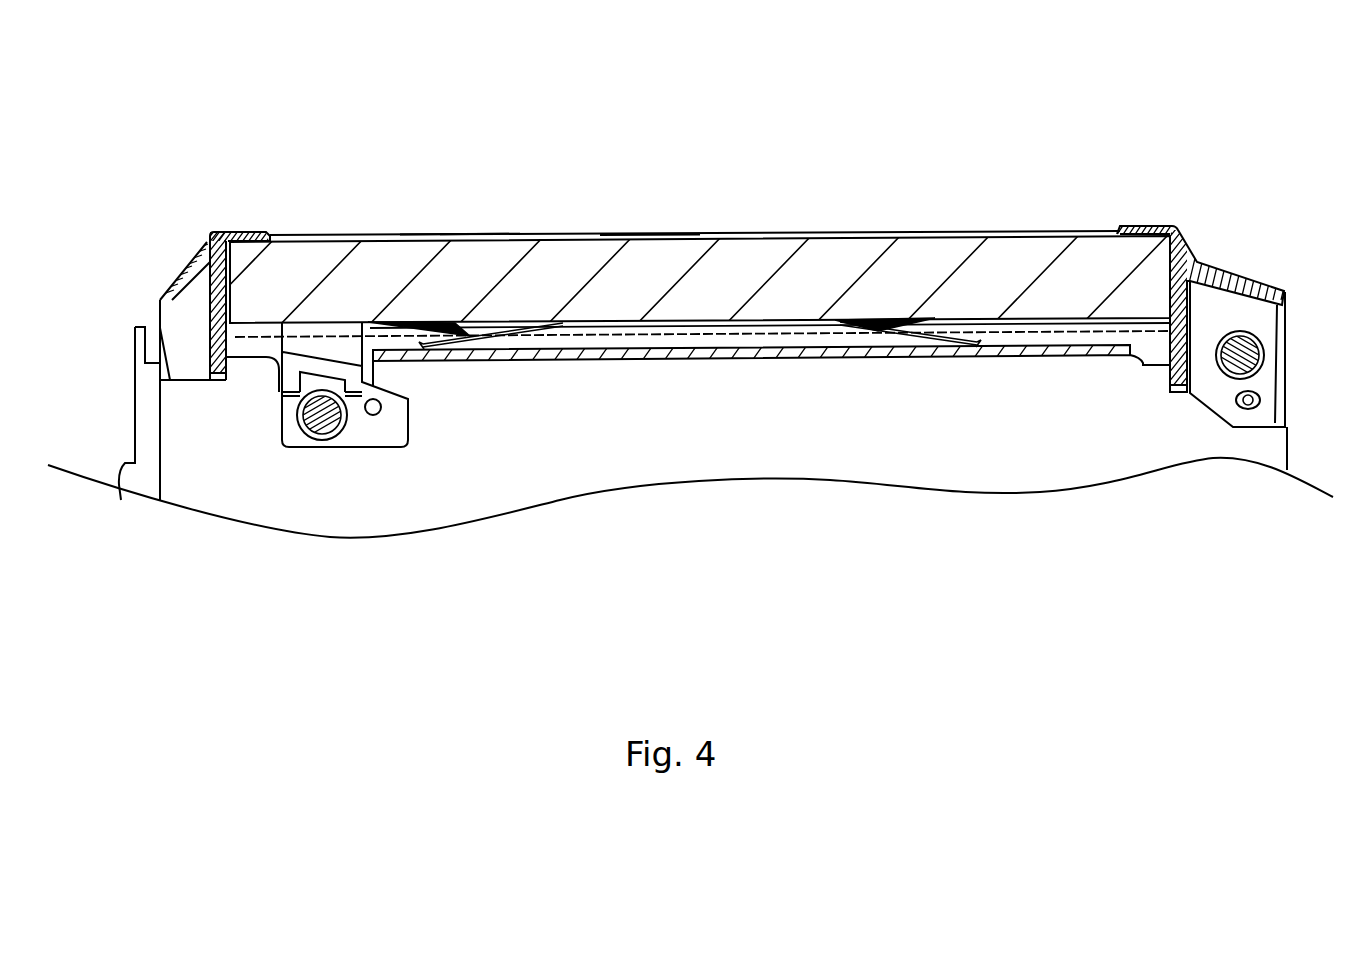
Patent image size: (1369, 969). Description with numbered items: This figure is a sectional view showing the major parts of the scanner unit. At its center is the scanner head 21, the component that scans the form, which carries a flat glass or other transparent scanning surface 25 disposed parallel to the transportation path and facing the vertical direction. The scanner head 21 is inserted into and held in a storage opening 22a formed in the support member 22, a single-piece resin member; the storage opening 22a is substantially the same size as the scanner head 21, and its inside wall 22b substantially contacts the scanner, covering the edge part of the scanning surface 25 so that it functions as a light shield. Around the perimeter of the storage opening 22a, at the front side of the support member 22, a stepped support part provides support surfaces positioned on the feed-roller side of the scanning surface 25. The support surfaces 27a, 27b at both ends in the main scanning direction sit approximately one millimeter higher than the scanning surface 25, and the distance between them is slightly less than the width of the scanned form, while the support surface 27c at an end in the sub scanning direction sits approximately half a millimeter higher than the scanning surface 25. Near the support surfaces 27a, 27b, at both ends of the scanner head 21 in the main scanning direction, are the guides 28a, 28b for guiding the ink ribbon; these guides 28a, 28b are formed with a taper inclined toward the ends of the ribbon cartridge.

The scanner head 21 is at (941, 253).
The support member 22 is at (1226, 256).
The storage opening 22a is at (808, 222).
The inside wall 22b is at (245, 243).
The scanning surface 25 is at (641, 235).
The support surface 27a is at (230, 234).
The support surface 27b is at (1148, 227).
The support surface 27c is at (464, 235).
The guide 28a is at (193, 262).
The guide 28b is at (1268, 283).